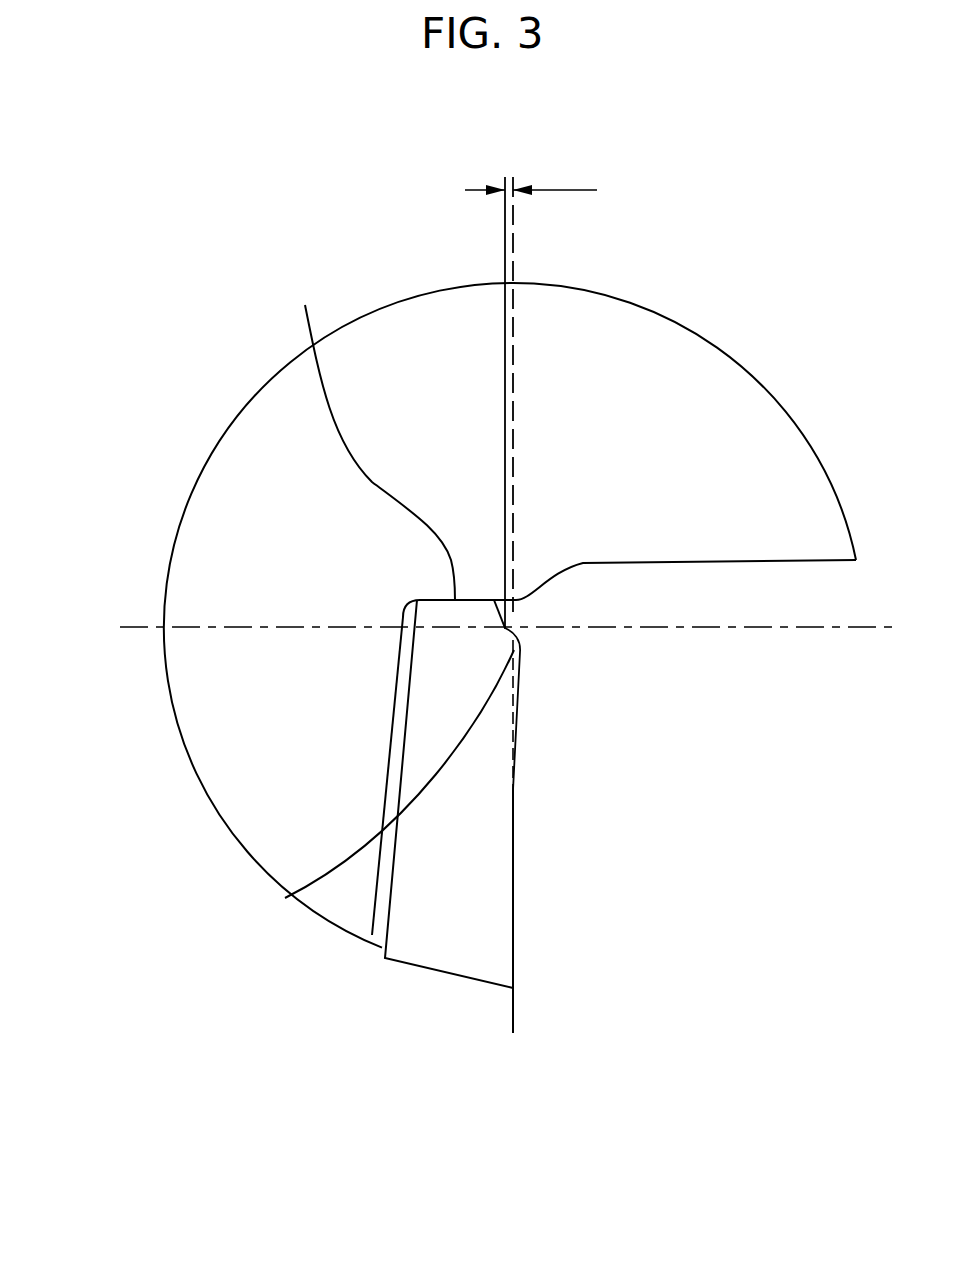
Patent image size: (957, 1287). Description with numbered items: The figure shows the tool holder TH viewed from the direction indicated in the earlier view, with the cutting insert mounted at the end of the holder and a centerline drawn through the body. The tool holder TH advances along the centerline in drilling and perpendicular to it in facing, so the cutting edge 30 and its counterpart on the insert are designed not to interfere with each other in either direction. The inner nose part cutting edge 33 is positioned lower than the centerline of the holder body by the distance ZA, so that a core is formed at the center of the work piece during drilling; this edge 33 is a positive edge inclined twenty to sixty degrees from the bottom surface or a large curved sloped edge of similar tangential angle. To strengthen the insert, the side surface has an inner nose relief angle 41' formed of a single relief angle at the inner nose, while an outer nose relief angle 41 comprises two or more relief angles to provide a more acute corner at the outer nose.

The tool holder TH is at (212, 403).
The cutting edge 30 is at (480, 818).
The outer nose relief angle 41 is at (446, 852).
The inner nose relief angle 41' is at (372, 435).
The inner nose part cutting edge 33 is at (285, 898).
The offset distance ZA is at (531, 175).